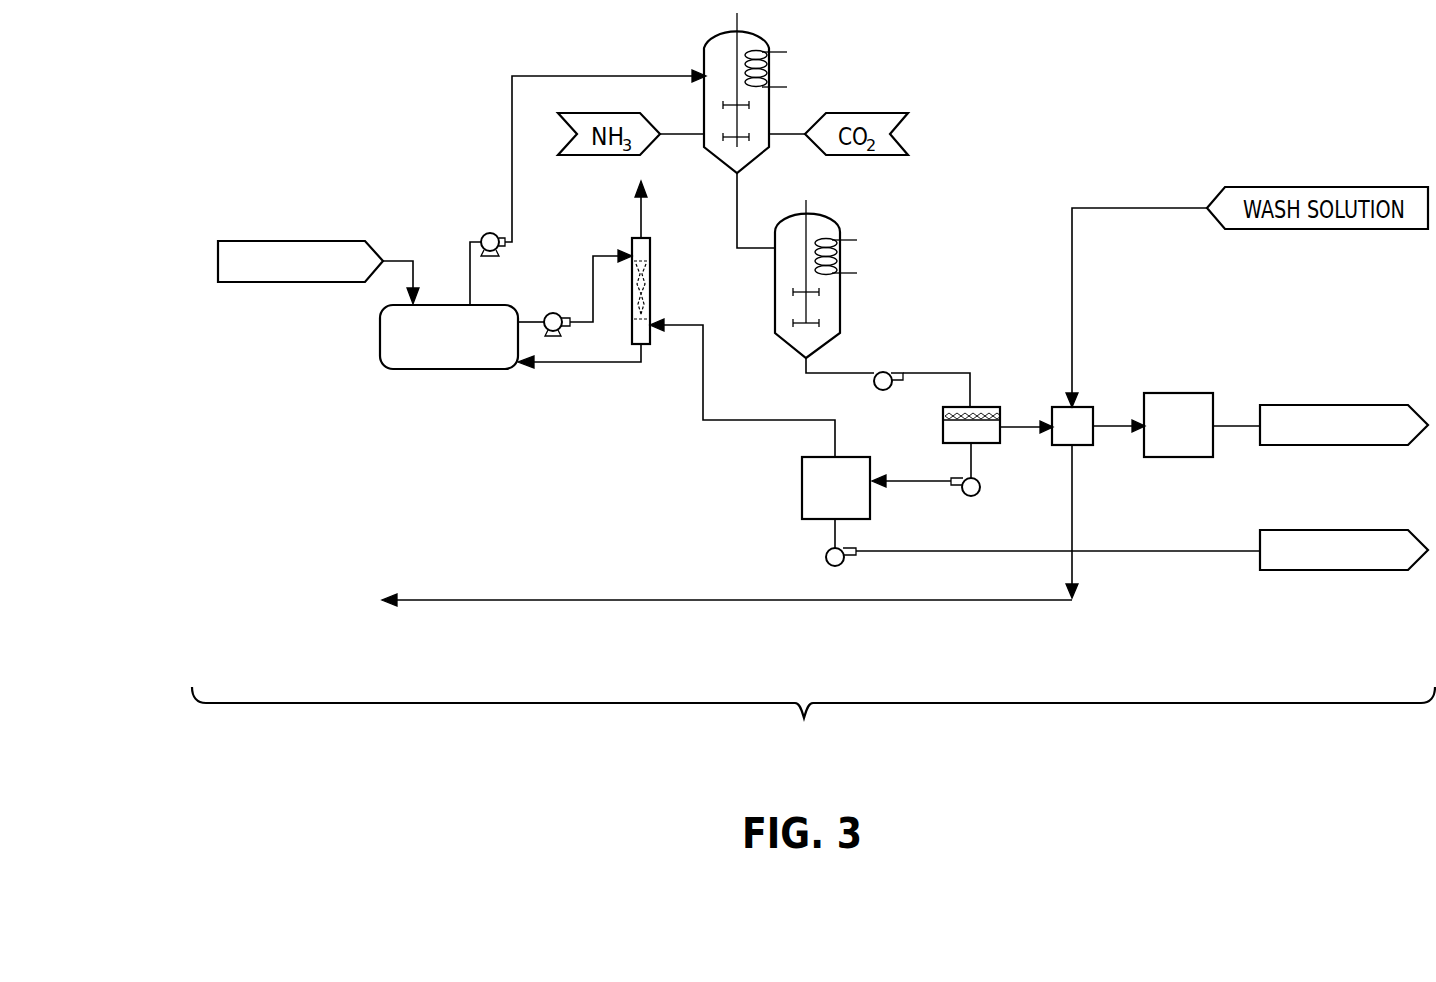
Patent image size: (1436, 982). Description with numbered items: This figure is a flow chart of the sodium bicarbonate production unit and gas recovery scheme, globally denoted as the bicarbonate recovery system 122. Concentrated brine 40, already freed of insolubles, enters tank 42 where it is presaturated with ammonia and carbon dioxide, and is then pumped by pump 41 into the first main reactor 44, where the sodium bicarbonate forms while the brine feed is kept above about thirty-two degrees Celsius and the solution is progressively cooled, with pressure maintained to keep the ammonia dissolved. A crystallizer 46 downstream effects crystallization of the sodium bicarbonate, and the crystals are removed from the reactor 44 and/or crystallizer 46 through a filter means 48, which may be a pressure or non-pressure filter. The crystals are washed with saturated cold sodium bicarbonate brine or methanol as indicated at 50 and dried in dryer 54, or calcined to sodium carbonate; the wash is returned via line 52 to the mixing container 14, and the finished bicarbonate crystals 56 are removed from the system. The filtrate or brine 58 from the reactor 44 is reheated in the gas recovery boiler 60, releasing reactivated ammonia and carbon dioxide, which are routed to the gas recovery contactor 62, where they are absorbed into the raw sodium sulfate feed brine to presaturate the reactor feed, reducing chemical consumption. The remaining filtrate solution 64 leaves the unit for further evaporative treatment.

The mixing container 14 is at (300, 623).
The brine 40 is at (218, 262).
The pump 41 is at (486, 234).
The tank 42 is at (380, 338).
The first main reactor 44 is at (704, 52).
The crystallizer 46 is at (840, 322).
The filter means 48 is at (943, 430).
The wash 50 is at (1088, 405).
The line 52 is at (513, 598).
The dryer 54 is at (1168, 393).
The bicarbonate crystals 56 is at (1323, 405).
The filtrate or brine 58 is at (977, 464).
The gas recovery boiler 60 is at (802, 493).
The gas recovery contactor 62 is at (650, 290).
The filtrate solution 64 is at (1337, 571).
The bicarbonate recovery system 122 is at (813, 727).